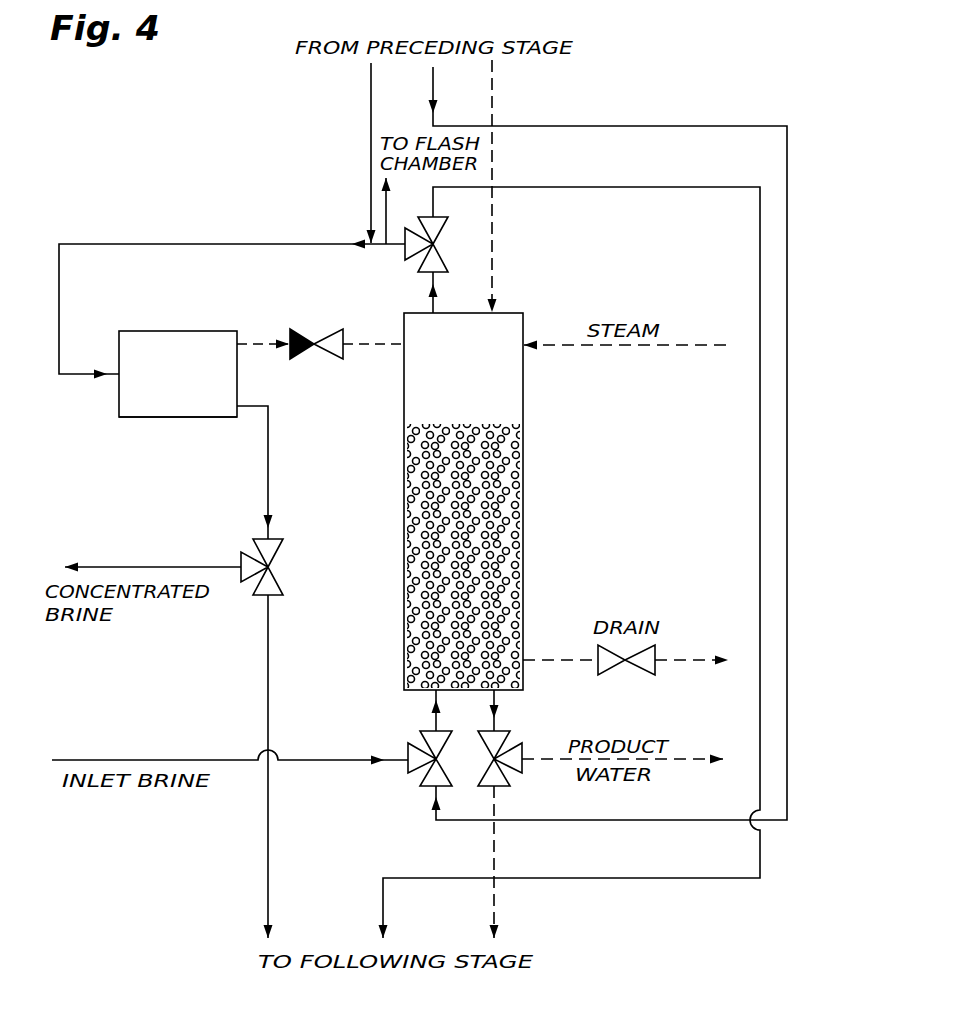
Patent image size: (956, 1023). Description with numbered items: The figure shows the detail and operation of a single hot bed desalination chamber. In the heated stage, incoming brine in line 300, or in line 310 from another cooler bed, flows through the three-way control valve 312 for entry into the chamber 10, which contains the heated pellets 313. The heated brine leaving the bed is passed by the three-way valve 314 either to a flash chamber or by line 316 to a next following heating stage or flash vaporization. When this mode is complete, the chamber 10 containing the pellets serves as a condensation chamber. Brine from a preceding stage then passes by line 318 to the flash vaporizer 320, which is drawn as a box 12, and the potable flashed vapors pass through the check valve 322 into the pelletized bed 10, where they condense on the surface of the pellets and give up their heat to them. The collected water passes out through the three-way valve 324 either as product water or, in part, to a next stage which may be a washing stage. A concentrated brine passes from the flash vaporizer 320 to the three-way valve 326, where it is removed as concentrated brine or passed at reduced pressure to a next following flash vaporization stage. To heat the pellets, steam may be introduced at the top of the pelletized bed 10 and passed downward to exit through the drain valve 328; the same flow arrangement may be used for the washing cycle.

The chamber 10 is at (528, 488).
The flash chamber / separator box 12 is at (181, 330).
The incoming brine line 300 is at (295, 760).
The brine line from cooler bed 310 is at (790, 608).
The 3-way control valve 312 is at (430, 777).
The heated pellets 313 is at (524, 528).
The 3-way valve 314 is at (462, 241).
The line to next stage 316 is at (575, 187).
The brine line from preceding stage 318 is at (184, 242).
The flash vaporizer 320 is at (192, 418).
The check valve 322 is at (296, 357).
The 3-way valve 324 is at (505, 735).
The 3-way valve 326 is at (280, 578).
The drain valve 328 is at (648, 652).